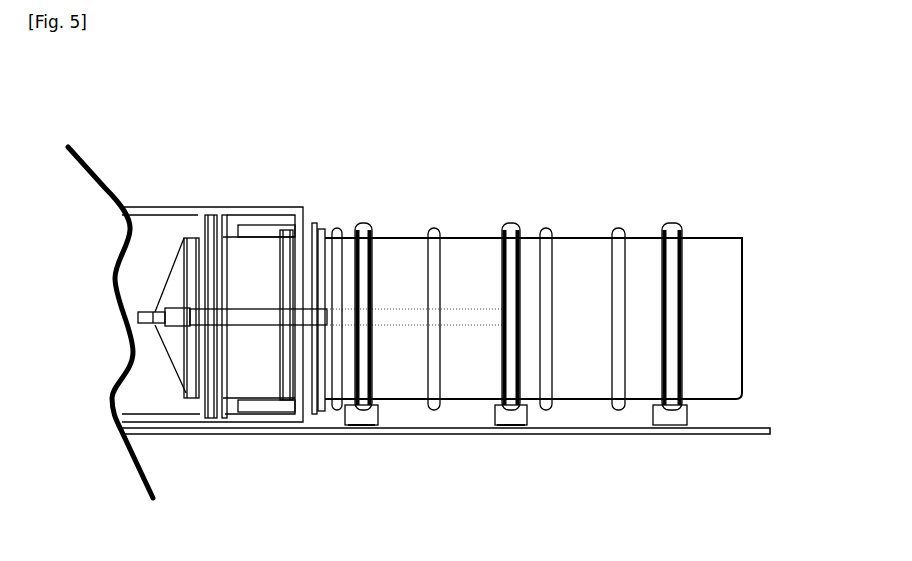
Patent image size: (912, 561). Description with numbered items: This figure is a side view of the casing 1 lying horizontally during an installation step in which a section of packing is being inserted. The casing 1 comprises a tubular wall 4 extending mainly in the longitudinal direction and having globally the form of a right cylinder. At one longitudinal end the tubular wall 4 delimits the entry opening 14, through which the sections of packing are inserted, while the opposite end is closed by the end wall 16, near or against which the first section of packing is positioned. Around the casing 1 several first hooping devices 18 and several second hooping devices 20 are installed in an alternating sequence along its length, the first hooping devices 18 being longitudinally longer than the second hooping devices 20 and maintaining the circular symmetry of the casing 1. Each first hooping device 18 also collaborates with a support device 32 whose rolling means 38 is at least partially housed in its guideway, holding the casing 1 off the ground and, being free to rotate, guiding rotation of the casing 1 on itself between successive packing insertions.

The casing 1 is at (782, 272).
The tubular wall 4 is at (707, 383).
The entry opening 14 is at (318, 360).
The end wall 16 is at (743, 322).
The first hooping device 18 is at (364, 222).
The second hooping device 20 is at (333, 410).
The support device 32 is at (358, 428).
The rolling means 38 is at (503, 432).